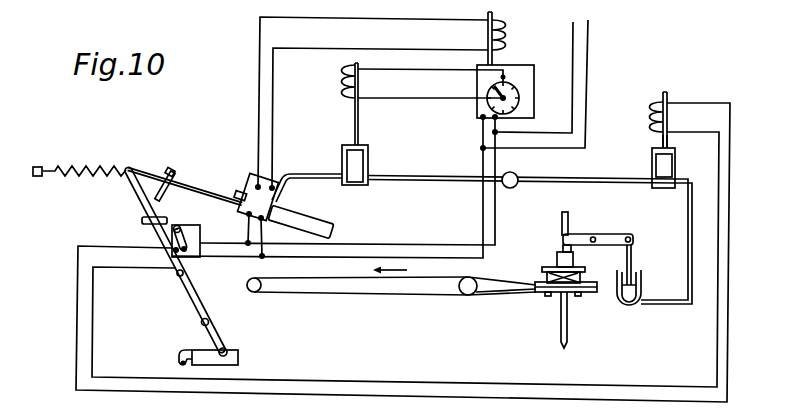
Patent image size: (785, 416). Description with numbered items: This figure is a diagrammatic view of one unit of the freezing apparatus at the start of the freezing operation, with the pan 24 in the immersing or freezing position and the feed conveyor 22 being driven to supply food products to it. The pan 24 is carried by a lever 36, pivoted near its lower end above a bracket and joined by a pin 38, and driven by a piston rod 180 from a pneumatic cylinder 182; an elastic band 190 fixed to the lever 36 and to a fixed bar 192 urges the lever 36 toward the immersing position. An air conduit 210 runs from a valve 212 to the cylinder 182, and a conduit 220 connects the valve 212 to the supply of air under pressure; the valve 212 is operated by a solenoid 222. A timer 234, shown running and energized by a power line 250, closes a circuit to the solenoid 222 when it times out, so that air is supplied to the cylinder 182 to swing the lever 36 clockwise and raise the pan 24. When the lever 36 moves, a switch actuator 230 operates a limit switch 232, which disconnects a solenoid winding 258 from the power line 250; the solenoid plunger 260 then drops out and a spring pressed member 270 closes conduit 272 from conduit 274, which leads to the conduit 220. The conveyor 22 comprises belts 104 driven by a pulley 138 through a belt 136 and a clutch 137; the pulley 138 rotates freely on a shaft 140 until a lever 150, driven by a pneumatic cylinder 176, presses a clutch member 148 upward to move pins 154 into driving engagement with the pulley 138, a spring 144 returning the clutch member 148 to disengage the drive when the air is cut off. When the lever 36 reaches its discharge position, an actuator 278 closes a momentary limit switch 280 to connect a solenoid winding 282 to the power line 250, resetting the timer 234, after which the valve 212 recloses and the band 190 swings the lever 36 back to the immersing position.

The feed conveyor 22 is at (422, 298).
The pan 24 is at (240, 353).
The lever 36 is at (195, 303).
The pivot 38 is at (210, 325).
The belt 104 is at (345, 293).
The belt 136 is at (505, 298).
The clutch 137 is at (522, 311).
The pulley 138 is at (543, 298).
The shaft 140 is at (565, 332).
The spring 144 is at (577, 278).
The clutch member 148 is at (556, 257).
The lever 150 is at (620, 233).
The pins 154 is at (543, 272).
The pneumatic cylinder 176 is at (617, 305).
The piston rod 180 is at (195, 190).
The pneumatic cylinder 182 is at (303, 221).
The elastic band 190 is at (92, 166).
The bar 192 is at (40, 166).
The air conduit 210 is at (300, 173).
The valve 212 is at (362, 170).
The conduit 220 is at (510, 188).
The solenoid 222 is at (342, 87).
The switch actuator 230 is at (142, 221).
The limit switch 232 is at (200, 220).
The timer 234 is at (513, 64).
The power line 250 is at (591, 70).
The solenoid winding 258 is at (648, 101).
The solenoid plunger 260 is at (661, 143).
The spring pressed member 270 is at (664, 167).
The conduit 272 is at (686, 248).
The conduit 274 is at (633, 185).
The actuator 278 is at (171, 169).
The momentary limit switch 280 is at (247, 179).
The solenoid winding 282 is at (507, 26).